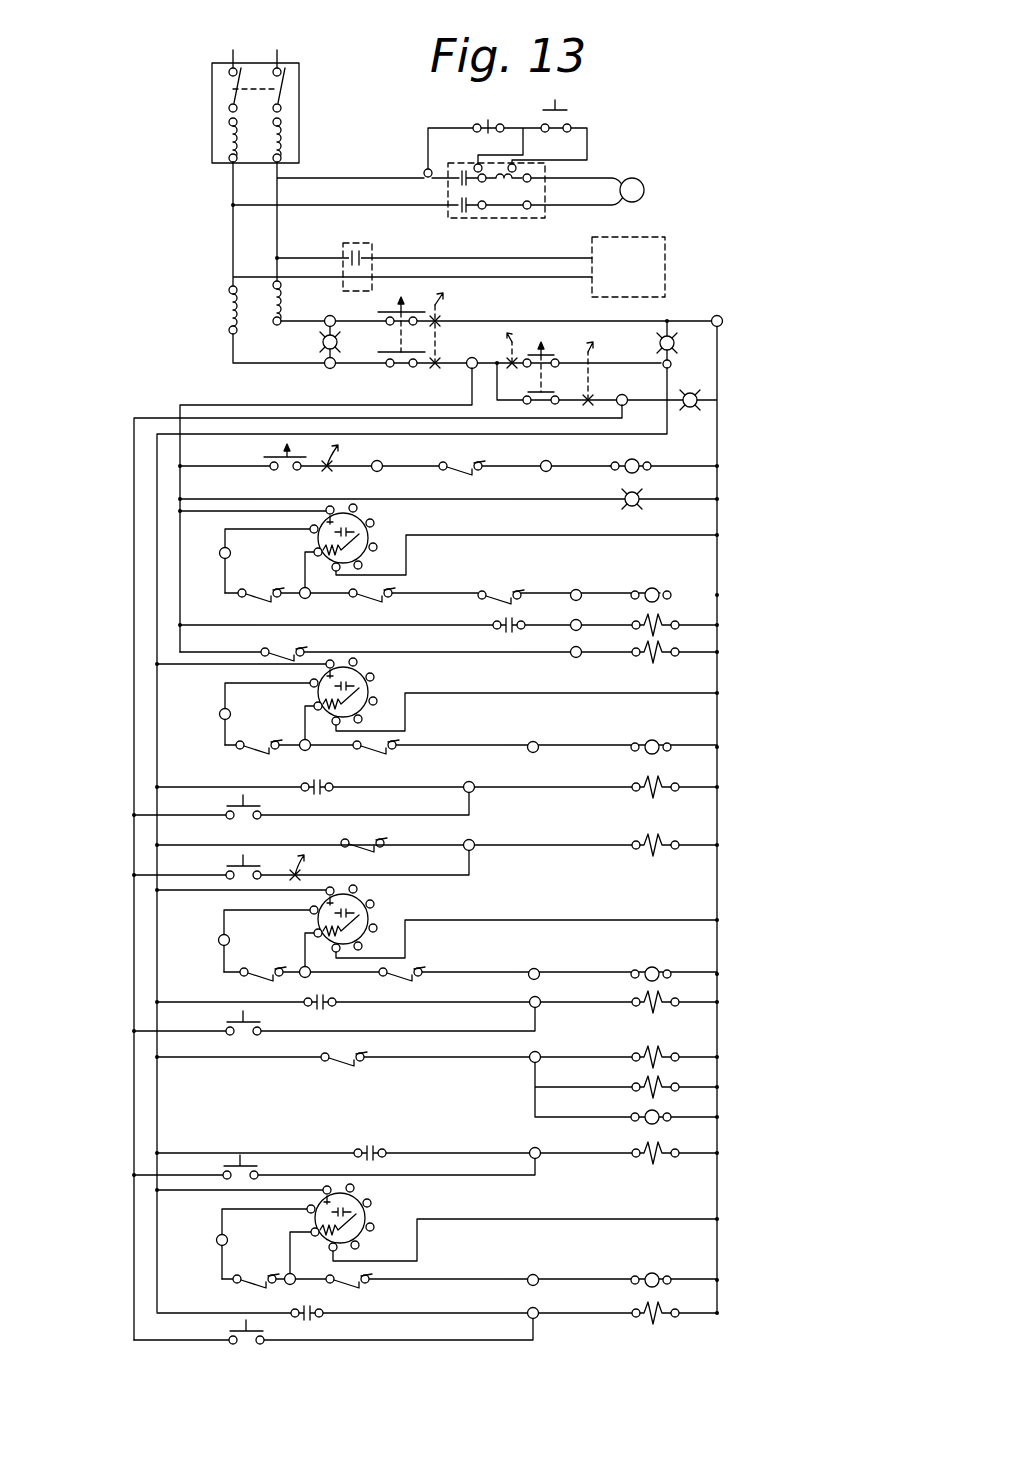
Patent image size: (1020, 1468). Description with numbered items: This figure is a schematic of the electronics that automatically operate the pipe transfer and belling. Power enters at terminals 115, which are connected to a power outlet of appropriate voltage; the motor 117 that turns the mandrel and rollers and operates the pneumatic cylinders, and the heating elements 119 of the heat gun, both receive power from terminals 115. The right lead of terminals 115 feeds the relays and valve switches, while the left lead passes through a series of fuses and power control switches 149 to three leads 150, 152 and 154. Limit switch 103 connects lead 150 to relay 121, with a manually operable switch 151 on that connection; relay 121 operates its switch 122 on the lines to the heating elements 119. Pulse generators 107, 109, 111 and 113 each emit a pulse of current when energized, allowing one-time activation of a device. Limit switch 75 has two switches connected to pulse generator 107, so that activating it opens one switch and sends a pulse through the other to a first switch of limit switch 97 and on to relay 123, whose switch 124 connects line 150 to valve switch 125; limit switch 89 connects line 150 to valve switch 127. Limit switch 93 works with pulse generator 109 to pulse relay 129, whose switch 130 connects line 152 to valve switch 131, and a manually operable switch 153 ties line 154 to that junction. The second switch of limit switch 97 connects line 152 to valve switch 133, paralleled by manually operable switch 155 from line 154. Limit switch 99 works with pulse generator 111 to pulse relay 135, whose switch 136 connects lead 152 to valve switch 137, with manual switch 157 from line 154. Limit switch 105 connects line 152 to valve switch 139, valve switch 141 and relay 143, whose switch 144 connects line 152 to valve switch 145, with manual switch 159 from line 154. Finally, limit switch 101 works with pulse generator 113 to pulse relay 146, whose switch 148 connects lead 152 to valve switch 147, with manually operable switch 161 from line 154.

The terminals 115 is at (268, 8).
The motor 117 is at (644, 189).
The heating elements 119 is at (665, 277).
The switch 122 is at (357, 256).
The fuses and power control switches 149 is at (206, 299).
The lead 150 is at (355, 405).
The manually operable switch 151 is at (268, 466).
The lead 152 is at (157, 535).
The lead 154 is at (133, 567).
The relay 121 is at (640, 463).
The limit switch 103 is at (470, 470).
The pulse generator 107 is at (369, 532).
The pulse generator 109 is at (369, 689).
The pulse generator 111 is at (371, 907).
The pulse generator 113 is at (371, 1212).
The limit switch 75 is at (349, 592).
The limit switch 89 is at (264, 651).
The limit switch 93 is at (354, 749).
The limit switch 97 is at (490, 583).
The limit switch 99 is at (240, 972).
The limit switch 101 is at (236, 1281).
The limit switch 105 is at (348, 1065).
The relay 123 is at (660, 589).
The switch 124 is at (512, 631).
The valve switch 125 is at (665, 633).
The valve switch 127 is at (665, 660).
The relay 129 is at (660, 740).
The switch 130 is at (322, 792).
The valve switch 131 is at (665, 795).
The valve switch 133 is at (665, 853).
The relay 135 is at (660, 967).
The switch 136 is at (322, 1009).
The valve switch 137 is at (665, 1010).
The valve switch 139 is at (665, 1064).
The valve switch 141 is at (665, 1094).
The relay 143 is at (660, 1124).
The switch 144 is at (374, 1150).
The valve switch 145 is at (665, 1160).
The relay 146 is at (660, 1273).
The valve switch 147 is at (665, 1320).
The switch 148 is at (322, 1317).
The manually operable switch 153 is at (226, 818).
The manually operable switch 155 is at (226, 878).
The manually operable switch 157 is at (226, 1034).
The manually operable switch 159 is at (226, 1177).
The manually operable switch 161 is at (236, 1346).